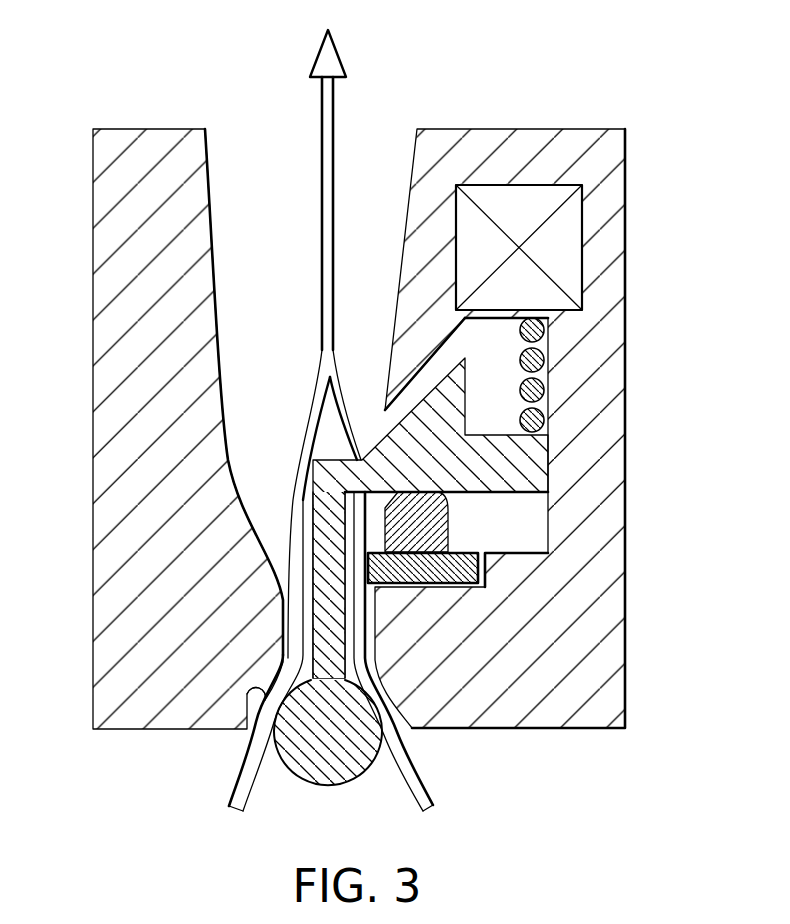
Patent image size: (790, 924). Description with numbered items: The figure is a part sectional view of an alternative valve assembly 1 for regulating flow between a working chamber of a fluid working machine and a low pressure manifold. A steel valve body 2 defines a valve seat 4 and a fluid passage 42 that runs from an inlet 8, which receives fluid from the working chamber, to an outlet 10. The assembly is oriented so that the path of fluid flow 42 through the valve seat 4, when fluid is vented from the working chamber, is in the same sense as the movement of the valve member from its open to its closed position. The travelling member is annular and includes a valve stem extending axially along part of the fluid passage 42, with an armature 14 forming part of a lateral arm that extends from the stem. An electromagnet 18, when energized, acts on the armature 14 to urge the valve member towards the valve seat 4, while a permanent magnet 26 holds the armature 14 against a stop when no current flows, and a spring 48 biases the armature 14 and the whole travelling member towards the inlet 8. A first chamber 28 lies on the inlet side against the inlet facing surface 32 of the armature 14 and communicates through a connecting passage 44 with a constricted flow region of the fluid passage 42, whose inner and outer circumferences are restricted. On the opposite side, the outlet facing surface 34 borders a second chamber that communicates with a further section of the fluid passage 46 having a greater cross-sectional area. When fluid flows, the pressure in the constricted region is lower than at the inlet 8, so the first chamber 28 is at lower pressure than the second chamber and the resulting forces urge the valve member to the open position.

The valve assembly 1 is at (88, 85).
The valve body 2 is at (93, 393).
The valve seat 4 is at (241, 702).
The inlet 8 is at (319, 837).
The outlet 10 is at (258, 128).
The armature 14 is at (548, 462).
The electromagnet 18 is at (585, 240).
The permanent magnet 26 is at (483, 562).
The first chamber 28 is at (537, 528).
The inlet facing surface 32 is at (497, 493).
The outlet facing surface 34 is at (493, 432).
The fluid passage 42 is at (317, 58).
The connecting passage 44 is at (445, 590).
The further section of the fluid passage 46 is at (208, 233).
The spring 48 is at (540, 370).